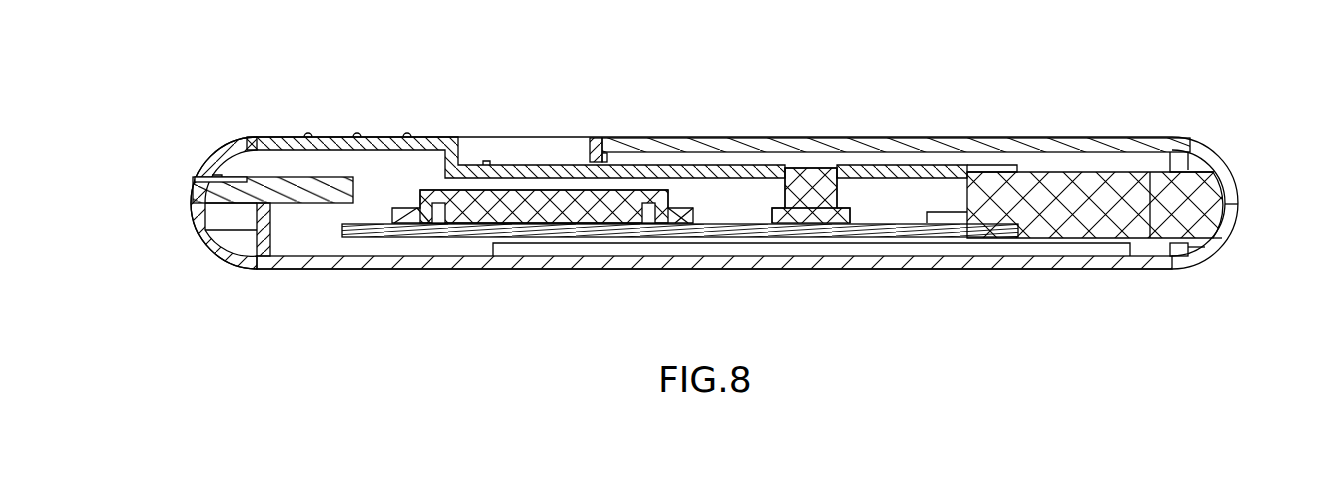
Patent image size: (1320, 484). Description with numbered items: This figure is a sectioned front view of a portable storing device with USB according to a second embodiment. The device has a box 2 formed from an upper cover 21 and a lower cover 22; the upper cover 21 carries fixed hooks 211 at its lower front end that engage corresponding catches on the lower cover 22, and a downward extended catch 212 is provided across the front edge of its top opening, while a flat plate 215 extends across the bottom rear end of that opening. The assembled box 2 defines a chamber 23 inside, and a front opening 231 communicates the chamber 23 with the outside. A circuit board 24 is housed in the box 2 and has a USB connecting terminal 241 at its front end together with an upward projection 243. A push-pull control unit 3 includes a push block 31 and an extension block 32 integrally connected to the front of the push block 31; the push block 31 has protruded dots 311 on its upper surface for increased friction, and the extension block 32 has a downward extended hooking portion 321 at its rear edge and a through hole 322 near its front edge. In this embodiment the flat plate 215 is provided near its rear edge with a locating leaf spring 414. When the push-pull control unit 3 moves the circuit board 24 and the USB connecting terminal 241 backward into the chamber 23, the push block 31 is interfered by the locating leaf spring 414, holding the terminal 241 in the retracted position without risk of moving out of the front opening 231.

The box 2 is at (1050, 290).
The upper cover 21 is at (1000, 151).
The fixed hooks 211 is at (1178, 252).
The catch 212 is at (593, 158).
The flat plate 215 is at (277, 182).
The lower cover 22 is at (1097, 268).
The chamber 23 is at (1143, 172).
The front opening 231 is at (1218, 238).
The circuit board 24 is at (680, 258).
The USB connecting terminal 241 is at (1203, 197).
The upward projection 243 is at (803, 213).
The push-pull control unit 3 is at (608, 110).
The push block 31 is at (608, 110).
The protruded dots 311 is at (345, 146).
The extension block 32 is at (721, 144).
The hooking portion 321 is at (487, 163).
The through hole 322 is at (813, 168).
The locating leaf spring 414 is at (207, 178).